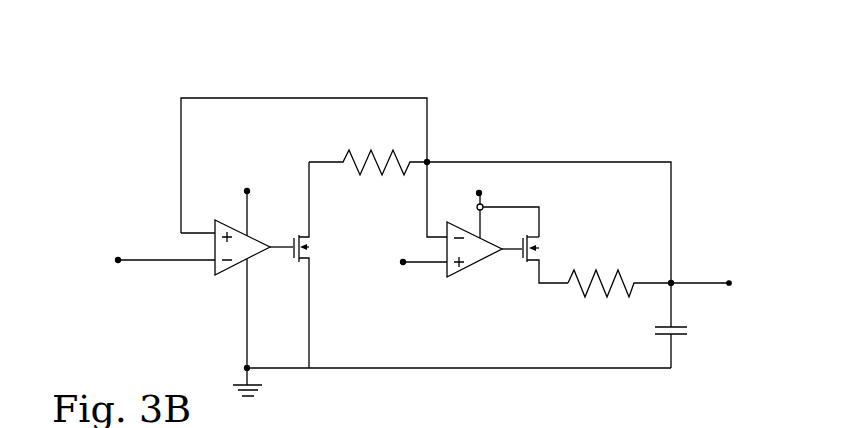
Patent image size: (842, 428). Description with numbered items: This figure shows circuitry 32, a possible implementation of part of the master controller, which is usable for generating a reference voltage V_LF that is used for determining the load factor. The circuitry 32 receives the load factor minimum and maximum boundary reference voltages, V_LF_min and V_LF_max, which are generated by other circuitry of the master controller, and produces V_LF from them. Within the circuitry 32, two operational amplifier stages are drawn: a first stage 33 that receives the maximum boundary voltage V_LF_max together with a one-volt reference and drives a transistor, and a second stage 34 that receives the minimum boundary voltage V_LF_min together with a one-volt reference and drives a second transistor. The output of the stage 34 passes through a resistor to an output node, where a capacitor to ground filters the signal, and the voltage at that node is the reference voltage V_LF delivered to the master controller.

The circuitry 32 is at (168, 59).
The first operational amplifier (maximum limiter) 33 is at (186, 281).
The second operational amplifier (minimum limiter) 34 is at (502, 286).